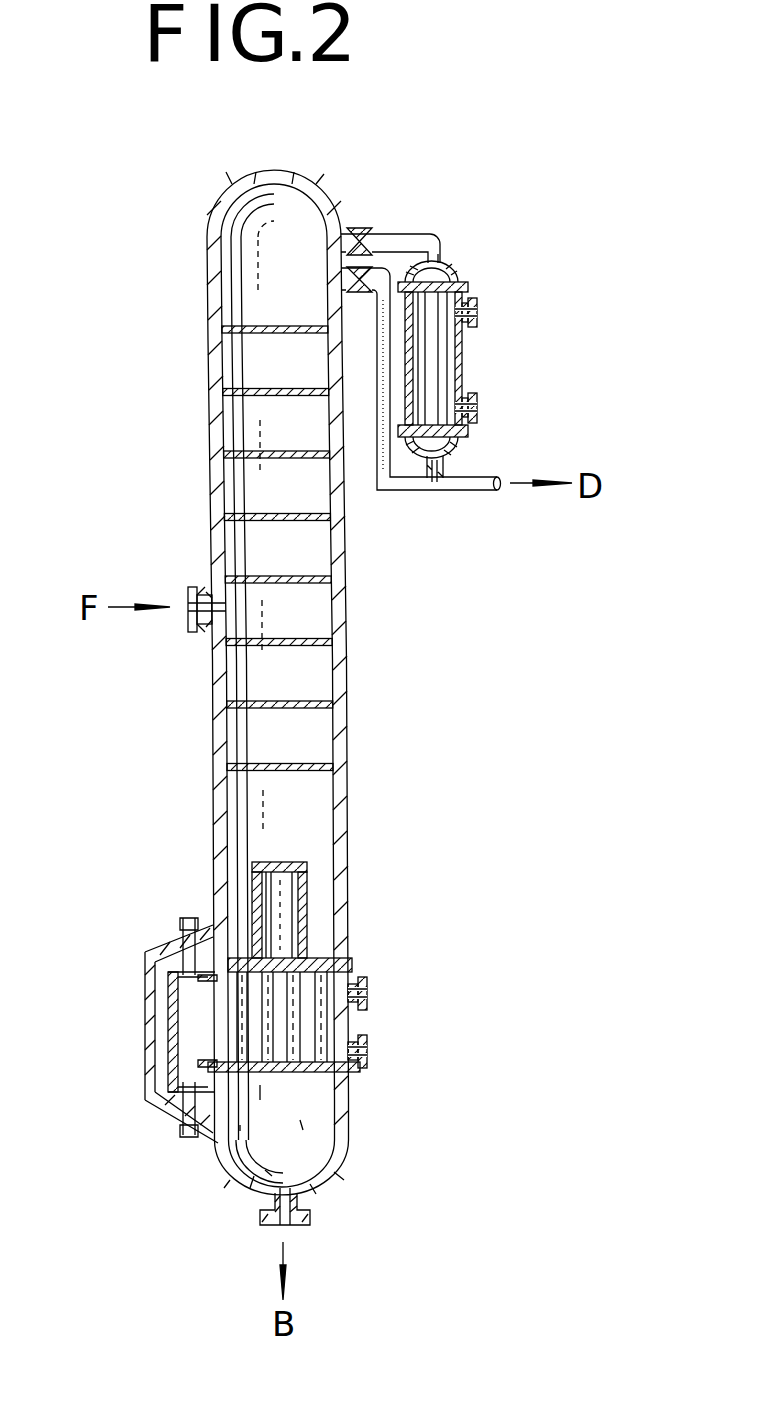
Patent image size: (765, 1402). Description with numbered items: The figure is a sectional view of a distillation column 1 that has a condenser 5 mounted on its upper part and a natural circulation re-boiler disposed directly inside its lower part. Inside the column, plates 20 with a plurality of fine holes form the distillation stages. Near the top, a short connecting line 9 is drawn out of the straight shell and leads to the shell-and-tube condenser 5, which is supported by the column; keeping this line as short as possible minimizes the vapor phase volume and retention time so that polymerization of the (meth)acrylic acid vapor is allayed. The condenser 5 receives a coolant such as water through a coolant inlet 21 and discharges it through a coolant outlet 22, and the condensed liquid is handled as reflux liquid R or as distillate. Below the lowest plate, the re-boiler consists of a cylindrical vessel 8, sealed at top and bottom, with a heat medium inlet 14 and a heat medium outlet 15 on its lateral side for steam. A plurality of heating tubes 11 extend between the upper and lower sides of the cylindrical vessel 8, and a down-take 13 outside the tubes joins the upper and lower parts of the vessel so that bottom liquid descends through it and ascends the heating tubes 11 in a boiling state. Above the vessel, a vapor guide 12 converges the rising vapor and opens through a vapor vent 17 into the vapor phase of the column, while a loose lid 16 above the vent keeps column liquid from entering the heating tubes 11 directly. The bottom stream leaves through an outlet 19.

The distillation column 1 is at (350, 607).
The condenser 5 is at (462, 360).
The cylindrical vessel 8 is at (348, 1025).
The connecting line 9 is at (413, 234).
The reflux liquid R is at (341, 272).
The heating tubes 11 is at (291, 1072).
The vapor guide 12 is at (307, 918).
The down-take 13 is at (146, 1019).
The heat medium inlet 14 is at (369, 992).
The heat medium outlet 15 is at (369, 1053).
The loose lid 16 is at (276, 862).
The vapor vent 17 is at (307, 872).
The outlet 19 is at (306, 1216).
The plate with a plurality of fine holes 20 is at (254, 765).
The coolant inlet 21 is at (479, 410).
The coolant outlet 22 is at (479, 310).